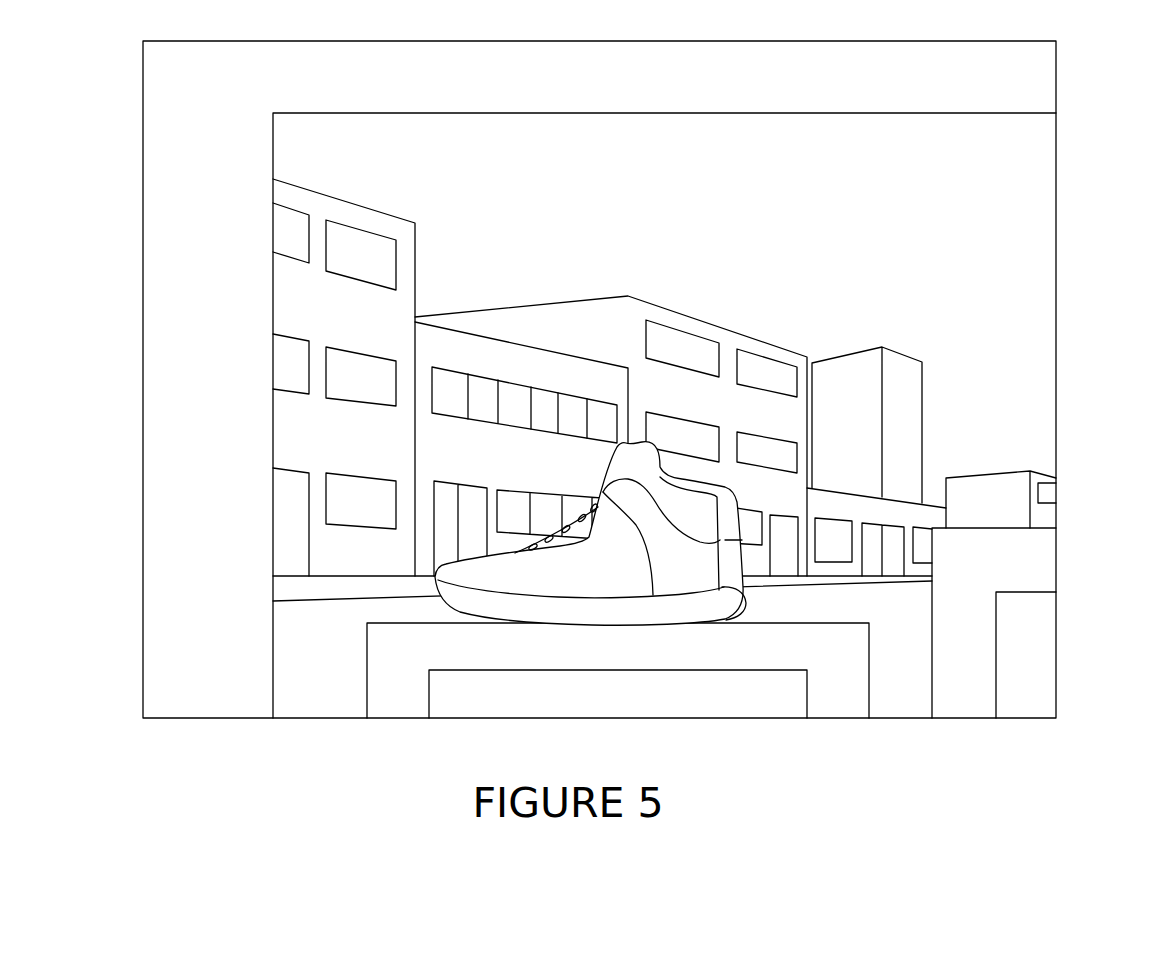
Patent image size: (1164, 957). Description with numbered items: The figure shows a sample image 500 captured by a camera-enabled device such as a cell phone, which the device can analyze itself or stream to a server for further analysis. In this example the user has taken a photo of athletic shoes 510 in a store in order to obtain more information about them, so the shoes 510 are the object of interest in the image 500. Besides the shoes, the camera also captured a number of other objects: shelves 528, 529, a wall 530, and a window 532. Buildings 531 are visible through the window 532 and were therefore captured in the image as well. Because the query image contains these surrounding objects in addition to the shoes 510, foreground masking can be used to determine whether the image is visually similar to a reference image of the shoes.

The sample image 500 is at (1056, 58).
The wall 530 is at (158, 75).
The window 532 is at (273, 137).
The buildings 531 is at (302, 316).
The shelf 528 is at (996, 671).
The shelf 529 is at (367, 683).
The athletic shoes 510 is at (733, 620).